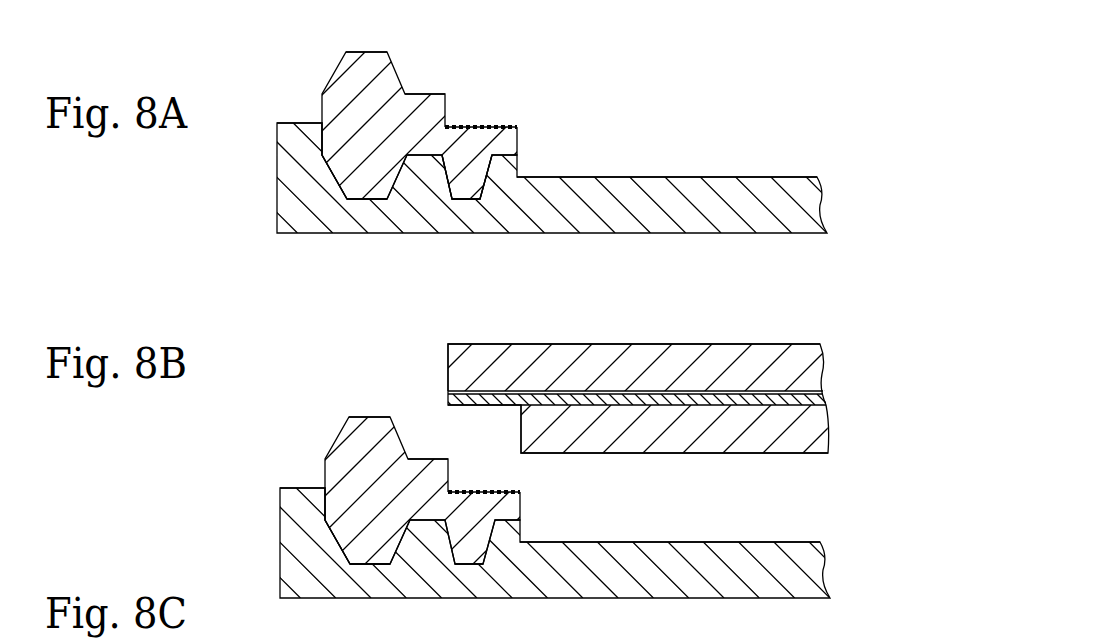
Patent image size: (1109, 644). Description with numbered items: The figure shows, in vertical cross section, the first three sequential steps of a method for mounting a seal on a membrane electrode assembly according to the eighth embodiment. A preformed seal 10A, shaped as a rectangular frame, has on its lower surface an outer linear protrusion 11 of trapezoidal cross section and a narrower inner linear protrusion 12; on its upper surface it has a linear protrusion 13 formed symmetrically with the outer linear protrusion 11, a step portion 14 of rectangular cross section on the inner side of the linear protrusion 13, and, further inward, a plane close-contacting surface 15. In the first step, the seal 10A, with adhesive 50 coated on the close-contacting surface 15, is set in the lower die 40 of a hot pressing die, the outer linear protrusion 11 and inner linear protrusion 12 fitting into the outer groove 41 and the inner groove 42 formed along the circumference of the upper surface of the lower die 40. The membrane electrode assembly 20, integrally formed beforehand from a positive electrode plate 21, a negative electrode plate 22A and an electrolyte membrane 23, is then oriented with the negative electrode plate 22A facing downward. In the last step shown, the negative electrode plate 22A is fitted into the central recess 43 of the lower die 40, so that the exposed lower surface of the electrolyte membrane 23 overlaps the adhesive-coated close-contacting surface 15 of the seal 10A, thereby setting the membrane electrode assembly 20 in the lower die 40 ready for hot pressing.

In FIG. 8A, the seal 10A is at (322, 113).
In FIG. 8C, the seal 10A is at (420, 488).
In FIG. 8A, the outer linear protrusion 11 is at (383, 202).
In FIG. 8C, the outer linear protrusion 11 is at (380, 603).
In FIG. 8A, the inner linear protrusion 12 is at (473, 200).
In FIG. 8C, the inner linear protrusion 12 is at (484, 602).
In FIG. 8A, the linear protrusion 13 is at (363, 50).
In FIG. 8C, the linear protrusion 13 is at (364, 395).
In FIG. 8A, the step portion 14 is at (427, 97).
In FIG. 8C, the step portion 14 is at (425, 424).
In FIG. 8A, the close-contacting surface 15 is at (465, 125).
In FIG. 8C, the close-contacting surface 15 is at (484, 458).
In FIG. 8B, the membrane electrode assembly 20 is at (624, 345).
In FIG. 8B, the positive electrode plate 21 is at (683, 343).
In FIG. 8B, the negative electrode plate 22A is at (703, 453).
In FIG. 8B, the electrolyte membrane 23 is at (770, 395).
In FIG. 8A, the lower die 40 is at (277, 202).
In FIG. 8C, the lower die 40 is at (562, 543).
In FIG. 8A, the outer groove 41 is at (370, 187).
In FIG. 8C, the outer groove 41 is at (296, 526).
In FIG. 8A, the inner groove 42 is at (453, 193).
In FIG. 8A, the recess 43 is at (668, 177).
In FIG. 8C, the recess 43 is at (670, 522).
In FIG. 8A, the adhesive 50 is at (473, 127).
In FIG. 8C, the adhesive 50 is at (511, 486).